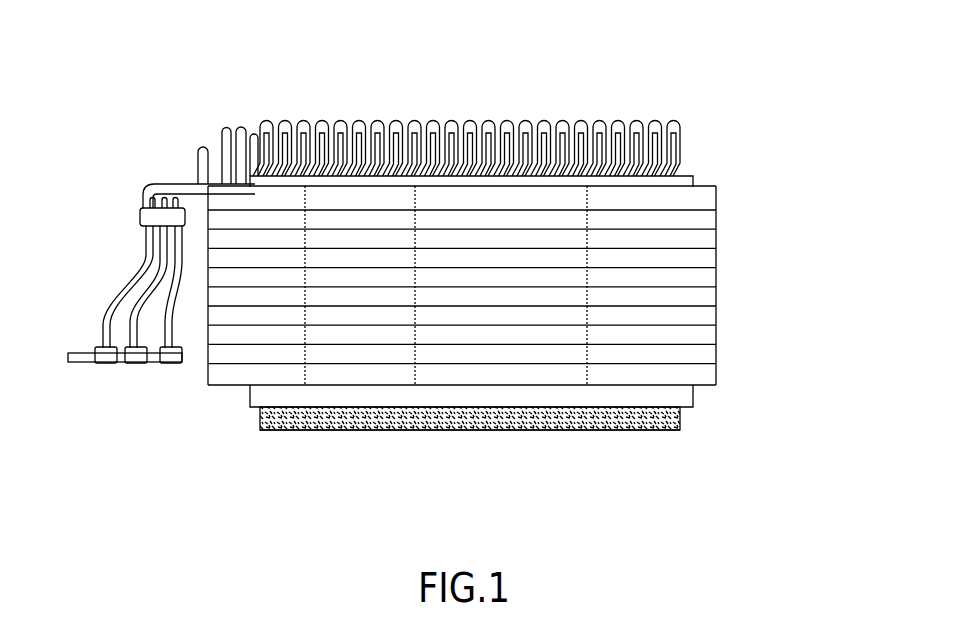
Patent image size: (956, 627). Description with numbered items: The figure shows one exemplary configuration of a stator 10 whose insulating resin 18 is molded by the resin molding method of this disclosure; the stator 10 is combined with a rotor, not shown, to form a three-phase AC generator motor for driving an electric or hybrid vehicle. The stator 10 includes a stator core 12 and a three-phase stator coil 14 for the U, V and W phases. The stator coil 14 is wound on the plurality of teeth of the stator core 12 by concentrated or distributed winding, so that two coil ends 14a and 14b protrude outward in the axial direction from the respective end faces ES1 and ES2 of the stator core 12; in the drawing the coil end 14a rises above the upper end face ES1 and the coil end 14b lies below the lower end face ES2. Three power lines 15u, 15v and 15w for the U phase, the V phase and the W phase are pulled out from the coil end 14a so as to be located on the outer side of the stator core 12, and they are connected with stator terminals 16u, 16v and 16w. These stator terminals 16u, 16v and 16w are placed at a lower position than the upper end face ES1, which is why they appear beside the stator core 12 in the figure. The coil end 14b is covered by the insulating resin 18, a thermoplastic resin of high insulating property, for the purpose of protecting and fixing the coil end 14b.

The stator 10 is at (721, 52).
The stator core 12 is at (716, 280).
The stator coil 14 is at (440, 100).
The coil end 14a is at (371, 97).
The coil end 14b is at (312, 450).
The power line 15u is at (157, 184).
The power line 15v is at (217, 186).
The power line 15w is at (245, 178).
The stator terminal 16u is at (82, 363).
The stator terminal 16v is at (120, 363).
The stator terminal 16w is at (152, 363).
The insulating resin 18 is at (483, 432).
The end face ES1 is at (687, 175).
The end face ES2 is at (694, 412).